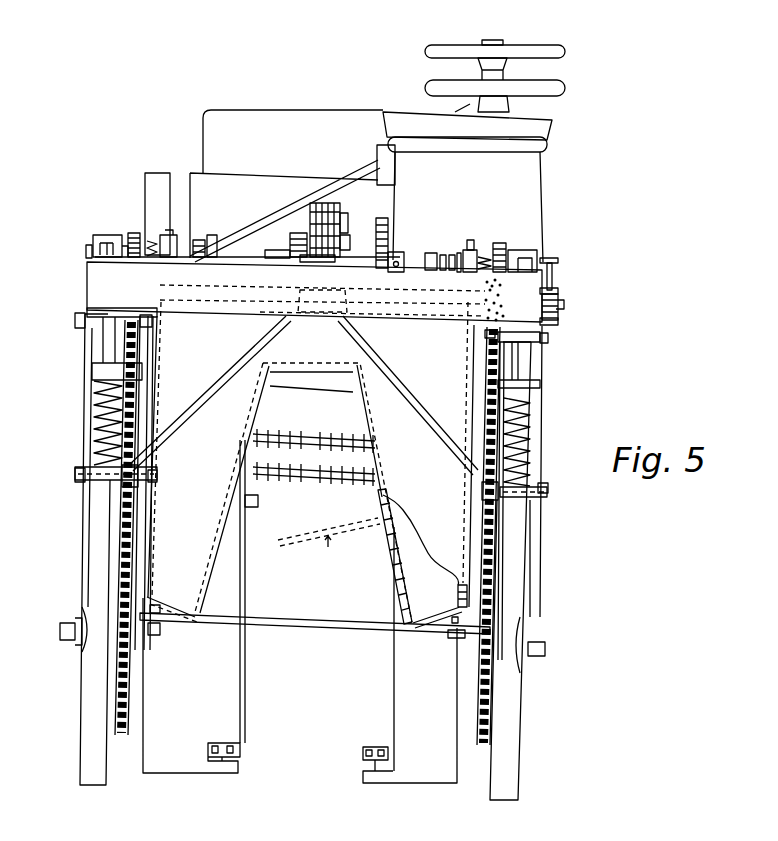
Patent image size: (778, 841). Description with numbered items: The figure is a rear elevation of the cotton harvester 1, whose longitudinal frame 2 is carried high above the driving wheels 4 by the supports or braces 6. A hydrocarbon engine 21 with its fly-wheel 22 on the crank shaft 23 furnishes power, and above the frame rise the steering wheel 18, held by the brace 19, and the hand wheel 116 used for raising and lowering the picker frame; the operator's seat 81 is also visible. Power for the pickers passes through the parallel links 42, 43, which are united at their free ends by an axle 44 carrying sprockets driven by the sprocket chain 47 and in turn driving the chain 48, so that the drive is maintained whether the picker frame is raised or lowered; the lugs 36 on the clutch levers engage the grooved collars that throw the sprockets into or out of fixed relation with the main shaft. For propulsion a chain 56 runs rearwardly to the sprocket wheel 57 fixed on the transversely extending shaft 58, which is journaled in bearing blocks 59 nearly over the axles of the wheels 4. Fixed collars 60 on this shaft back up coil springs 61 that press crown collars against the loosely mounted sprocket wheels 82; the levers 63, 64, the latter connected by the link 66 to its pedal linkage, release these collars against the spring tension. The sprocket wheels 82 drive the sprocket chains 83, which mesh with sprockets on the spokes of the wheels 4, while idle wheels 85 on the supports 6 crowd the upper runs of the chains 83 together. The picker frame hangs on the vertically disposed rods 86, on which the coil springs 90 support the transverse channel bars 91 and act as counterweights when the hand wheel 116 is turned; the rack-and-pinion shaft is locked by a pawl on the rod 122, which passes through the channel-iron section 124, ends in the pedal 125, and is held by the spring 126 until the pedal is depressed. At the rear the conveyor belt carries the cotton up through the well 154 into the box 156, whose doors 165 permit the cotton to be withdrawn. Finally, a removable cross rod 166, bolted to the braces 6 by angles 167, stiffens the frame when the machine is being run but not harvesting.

The harvester 1 is at (62, 610).
The longitudinal frame 2 is at (80, 290).
The driving wheels 4 is at (95, 686).
The supports 6 is at (223, 381).
The steering wheel 18 is at (428, 90).
The brace 19 is at (282, 200).
The hydrocarbon engine 21 is at (293, 141).
The fly-wheel 22 is at (161, 172).
The crank shaft 23 is at (86, 250).
The lug 36 is at (522, 358).
The parallel link 42 is at (299, 293).
The parallel link 43 is at (350, 234).
The axle 44 is at (350, 210).
The sprocket chain 47 is at (292, 236).
The chain 48 is at (330, 206).
The chain 56 is at (376, 232).
The sprocket wheel 57 is at (396, 252).
The transversely extending shaft 58 is at (330, 250).
The bearing blocks 59 is at (113, 235).
The fixed collars 60 is at (213, 243).
The coil springs 61 is at (196, 240).
The lever 63 is at (468, 243).
The lever 64 is at (174, 232).
The link 66 is at (290, 250).
The seat 81 is at (540, 192).
The sprocket wheels 82 is at (132, 232).
The sprocket chains 83 is at (480, 742).
The idle wheels 85 is at (150, 472).
The vertically disposed rods 86 is at (108, 348).
The coil spring 90 is at (97, 426).
The transverse channel bars 91 is at (97, 368).
The hand wheel 116 is at (430, 50).
The bar 122 is at (560, 270).
The section of channel iron 124 is at (560, 290).
The pedal 125 is at (556, 258).
The spring 126 is at (563, 305).
The well 154 is at (394, 718).
The box 156 is at (310, 465).
The doors 165 is at (382, 552).
The cross rod 166 is at (350, 625).
The angles 167 is at (152, 630).